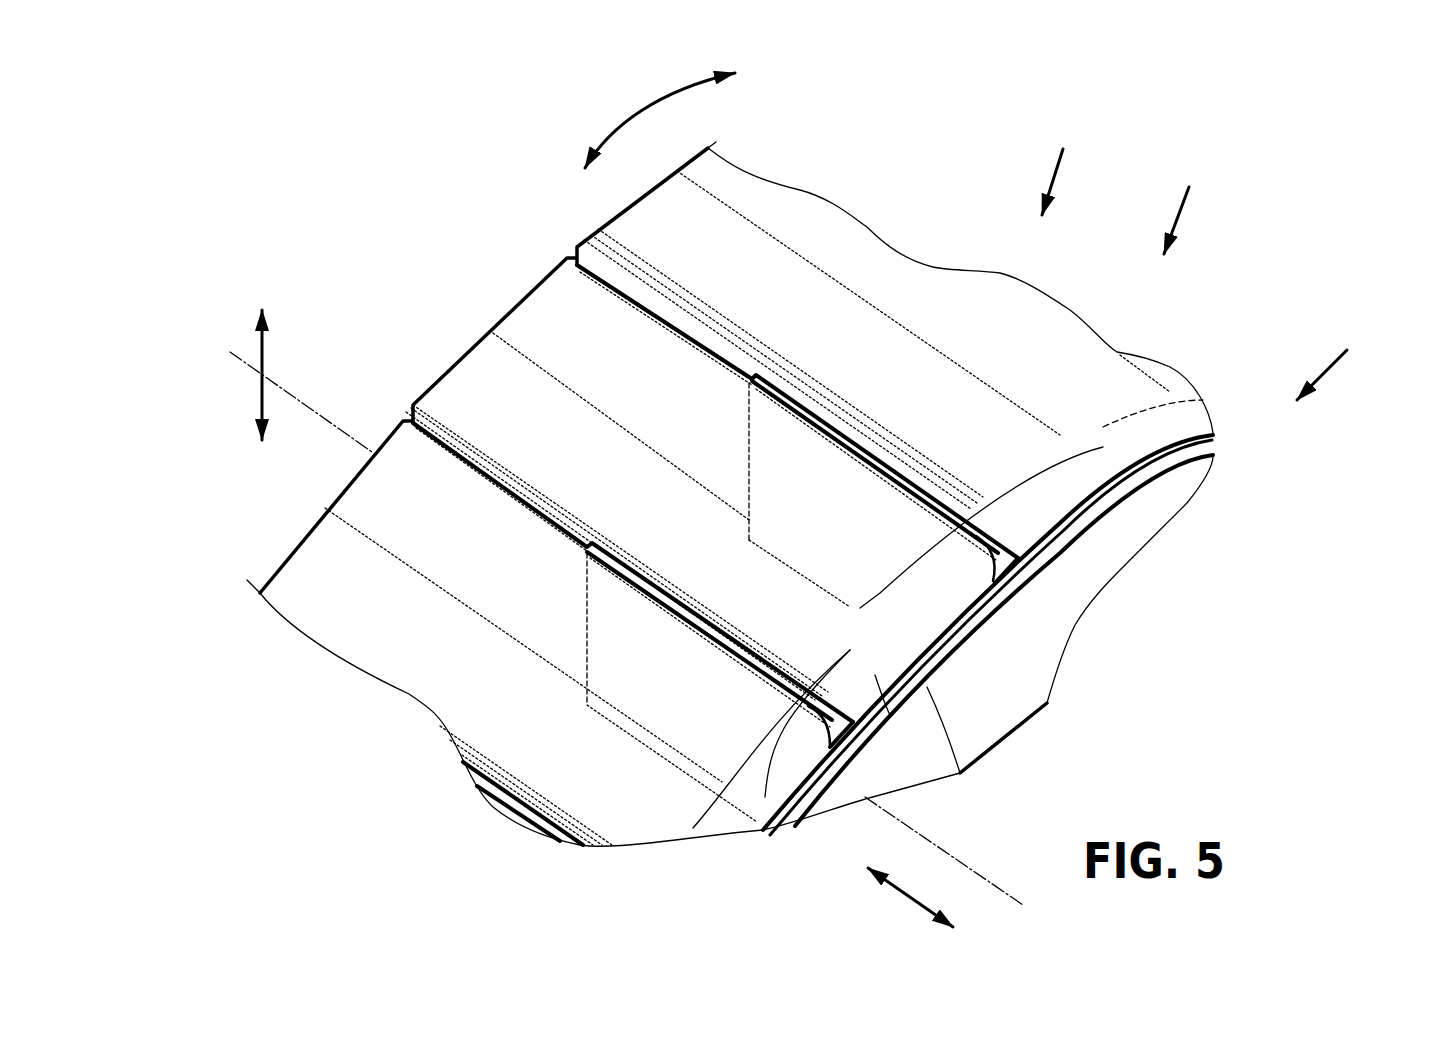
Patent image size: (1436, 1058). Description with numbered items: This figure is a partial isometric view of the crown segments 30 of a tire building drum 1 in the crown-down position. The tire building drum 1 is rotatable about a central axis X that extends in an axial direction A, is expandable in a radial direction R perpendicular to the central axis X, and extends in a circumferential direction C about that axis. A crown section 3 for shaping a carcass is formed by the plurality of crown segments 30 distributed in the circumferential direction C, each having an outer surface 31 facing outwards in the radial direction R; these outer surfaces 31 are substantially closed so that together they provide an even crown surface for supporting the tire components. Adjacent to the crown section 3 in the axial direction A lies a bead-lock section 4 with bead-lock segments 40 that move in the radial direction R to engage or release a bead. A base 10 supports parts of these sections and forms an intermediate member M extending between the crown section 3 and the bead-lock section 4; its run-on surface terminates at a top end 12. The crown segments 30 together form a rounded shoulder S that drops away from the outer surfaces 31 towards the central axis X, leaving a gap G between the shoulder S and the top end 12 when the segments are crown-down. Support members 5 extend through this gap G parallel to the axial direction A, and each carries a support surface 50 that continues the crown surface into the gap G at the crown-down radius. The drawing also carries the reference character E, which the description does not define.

The tire building drum 1 is at (1187, 191).
The crown section 3 is at (1063, 157).
The bead-lock section 4 is at (1332, 361).
The support members 5 is at (779, 401).
The base 10 is at (1092, 513).
The top end 12 is at (1190, 453).
The crown segments 30 is at (643, 220).
The outer surface 31 is at (790, 212).
The bead-lock segments 40 is at (1027, 667).
The support surface 50 is at (838, 442).
The gap G is at (1103, 450).
The edge E is at (1143, 442).
The intermediate member M is at (1045, 590).
The shoulder S is at (910, 652).
The circumferential direction C is at (660, 120).
The radial direction R is at (277, 361).
The axial direction A is at (910, 902).
The central axis X is at (613, 611).